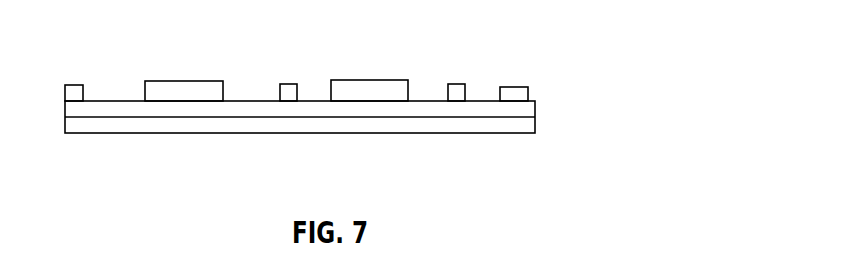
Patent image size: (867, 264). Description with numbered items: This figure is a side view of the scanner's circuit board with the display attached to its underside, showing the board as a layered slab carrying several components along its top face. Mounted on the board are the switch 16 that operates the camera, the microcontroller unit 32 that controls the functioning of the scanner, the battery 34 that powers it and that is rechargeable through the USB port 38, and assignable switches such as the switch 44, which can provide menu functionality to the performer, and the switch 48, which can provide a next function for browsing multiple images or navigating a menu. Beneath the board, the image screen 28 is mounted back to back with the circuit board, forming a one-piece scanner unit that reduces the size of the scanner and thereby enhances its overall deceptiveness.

The switch 16 is at (73, 85).
The image screen 28 is at (308, 133).
The microcontroller unit (MCU) 32 is at (183, 81).
The battery 34 is at (375, 80).
The USB port 38 is at (515, 87).
The switch 44 is at (287, 84).
The switch 48 is at (460, 84).